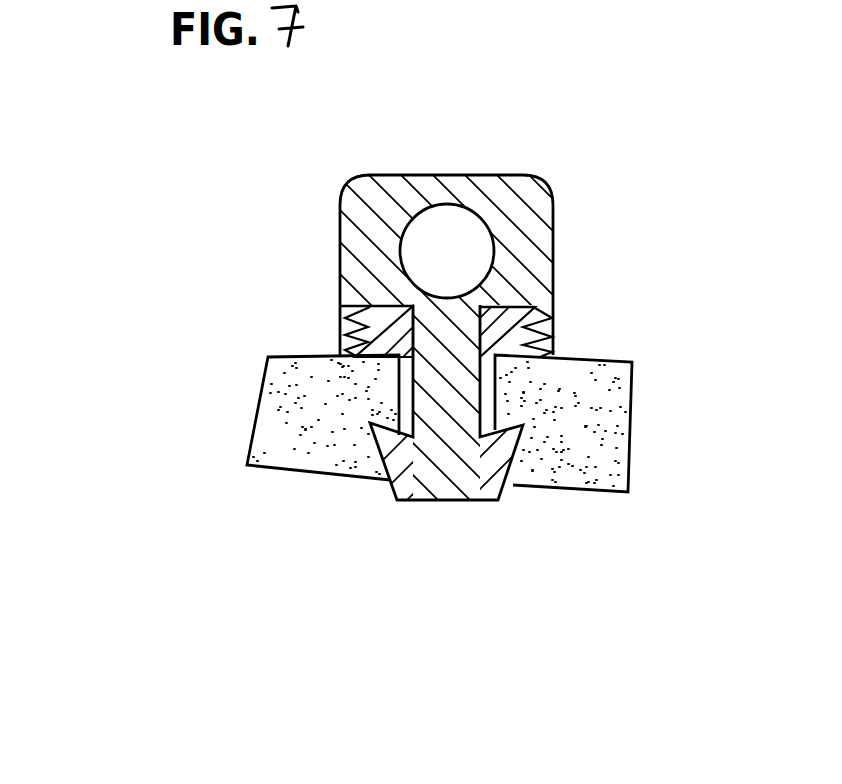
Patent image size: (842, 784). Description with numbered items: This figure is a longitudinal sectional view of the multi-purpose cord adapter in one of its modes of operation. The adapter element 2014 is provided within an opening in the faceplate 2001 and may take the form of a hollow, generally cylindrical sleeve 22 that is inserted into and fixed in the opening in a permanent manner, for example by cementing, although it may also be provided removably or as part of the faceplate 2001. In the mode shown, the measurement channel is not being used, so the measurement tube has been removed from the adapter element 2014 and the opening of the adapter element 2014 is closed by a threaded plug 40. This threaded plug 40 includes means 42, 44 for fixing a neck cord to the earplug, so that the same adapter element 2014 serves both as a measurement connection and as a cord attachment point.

The threaded plug 40 is at (330, 153).
The means for fixing a neck cord 42 is at (532, 244).
The means for fixing a neck cord 44 is at (432, 258).
The hollow, generally cylindrical sleeve 22 is at (372, 432).
The faceplate 2001 is at (300, 428).
The adapter element 2014 is at (525, 402).